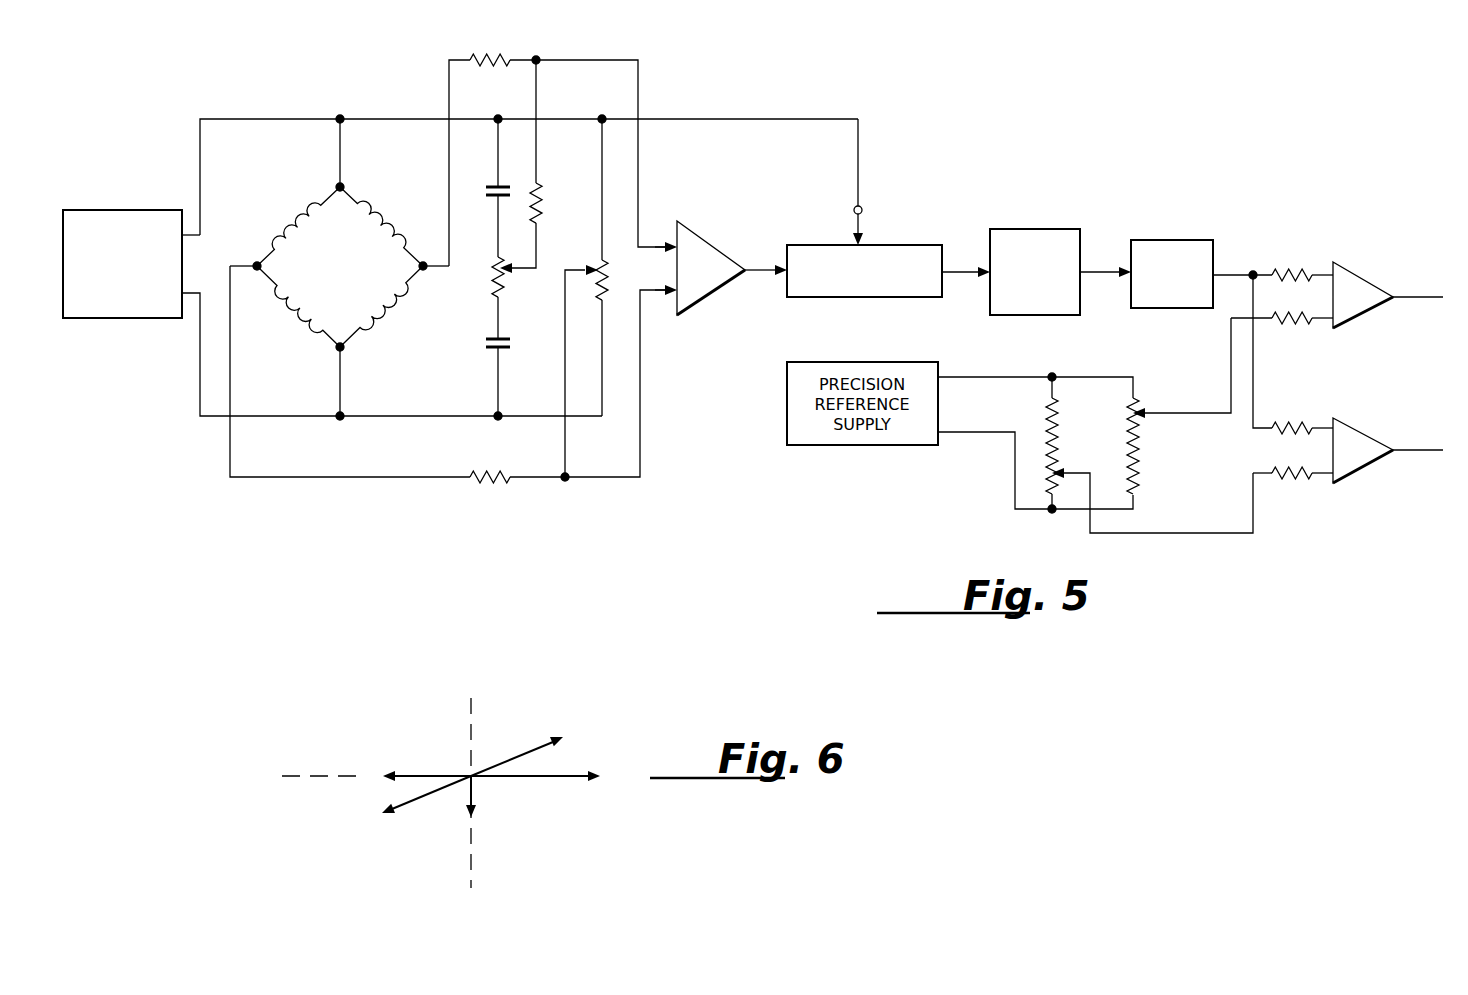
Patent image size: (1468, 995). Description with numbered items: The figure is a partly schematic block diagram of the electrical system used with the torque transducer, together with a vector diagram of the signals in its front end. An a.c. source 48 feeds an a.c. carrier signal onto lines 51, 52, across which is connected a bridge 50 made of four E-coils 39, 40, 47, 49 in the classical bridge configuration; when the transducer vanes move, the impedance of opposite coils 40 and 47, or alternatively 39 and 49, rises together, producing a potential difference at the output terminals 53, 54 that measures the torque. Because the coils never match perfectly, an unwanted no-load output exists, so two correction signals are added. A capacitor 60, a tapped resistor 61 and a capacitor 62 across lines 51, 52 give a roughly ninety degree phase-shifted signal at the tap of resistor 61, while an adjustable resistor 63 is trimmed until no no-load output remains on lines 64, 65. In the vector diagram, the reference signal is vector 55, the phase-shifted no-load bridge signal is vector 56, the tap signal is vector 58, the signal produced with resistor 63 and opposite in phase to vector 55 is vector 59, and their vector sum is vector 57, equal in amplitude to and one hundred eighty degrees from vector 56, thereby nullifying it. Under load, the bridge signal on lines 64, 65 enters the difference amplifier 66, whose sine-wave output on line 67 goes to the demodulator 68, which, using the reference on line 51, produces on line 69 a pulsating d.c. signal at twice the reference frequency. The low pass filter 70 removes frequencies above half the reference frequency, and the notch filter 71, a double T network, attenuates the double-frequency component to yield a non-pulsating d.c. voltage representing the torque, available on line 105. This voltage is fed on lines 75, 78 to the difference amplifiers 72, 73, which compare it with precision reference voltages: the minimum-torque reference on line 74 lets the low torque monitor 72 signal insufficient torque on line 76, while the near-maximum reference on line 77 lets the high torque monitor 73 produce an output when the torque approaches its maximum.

In FIG. 5, the coil 39 is at (392, 220).
In FIG. 5, the coil 40 is at (390, 308).
In FIG. 5, the coil 47 is at (306, 199).
In FIG. 5, the a.c. source 48 is at (128, 202).
In FIG. 5, the coil 49 is at (290, 315).
In FIG. 5, the bridge 50 is at (344, 267).
In FIG. 5, the line 51 is at (293, 118).
In FIG. 5, the line 52 is at (215, 416).
In FIG. 5, the terminal 53 is at (257, 265).
In FIG. 5, the terminal 54 is at (423, 266).
In FIG. 6, the vector 55 is at (560, 777).
In FIG. 6, the vector 56 is at (515, 750).
In FIG. 6, the vector 57 is at (433, 795).
In FIG. 6, the vector 58 is at (475, 780).
In FIG. 6, the vector 59 is at (422, 772).
In FIG. 5, the capacitor 60 is at (492, 186).
In FIG. 5, the resistor 61 is at (490, 274).
In FIG. 5, the capacitor 62 is at (505, 350).
In FIG. 5, the adjustable resistor 63 is at (598, 267).
In FIG. 5, the line 64 is at (652, 236).
In FIG. 5, the line 65 is at (651, 298).
In FIG. 5, the difference amplifier 66 is at (701, 300).
In FIG. 5, the line 67 is at (760, 260).
In FIG. 5, the demodulator 68 is at (920, 250).
In FIG. 5, the line 69 is at (959, 275).
In FIG. 5, the low pass filter 70 is at (1035, 237).
In FIG. 5, the notch filter 71 is at (1172, 240).
In FIG. 5, the difference amplifier 72 is at (1348, 282).
In FIG. 5, the difference amplifier 73 is at (1358, 466).
In FIG. 5, the line 74 is at (1323, 318).
In FIG. 5, the line 75 is at (1316, 273).
In FIG. 5, the line 76 is at (1412, 300).
In FIG. 5, the line 77 is at (1317, 473).
In FIG. 5, the line 78 is at (1320, 428).
In FIG. 5, the line 105 is at (1230, 272).